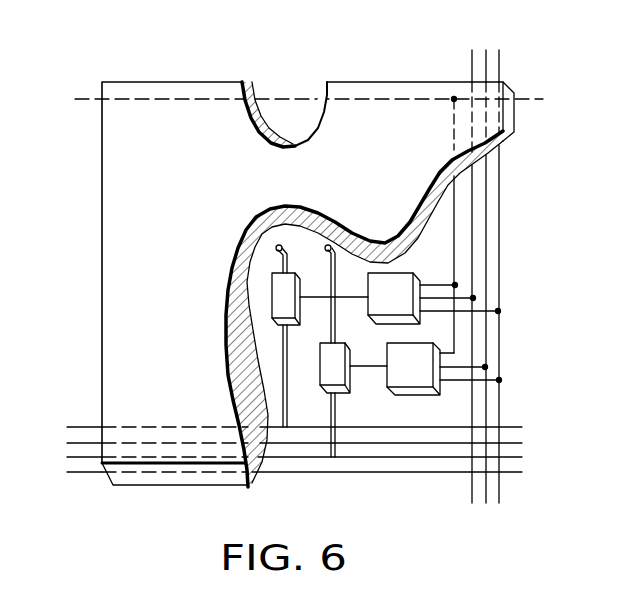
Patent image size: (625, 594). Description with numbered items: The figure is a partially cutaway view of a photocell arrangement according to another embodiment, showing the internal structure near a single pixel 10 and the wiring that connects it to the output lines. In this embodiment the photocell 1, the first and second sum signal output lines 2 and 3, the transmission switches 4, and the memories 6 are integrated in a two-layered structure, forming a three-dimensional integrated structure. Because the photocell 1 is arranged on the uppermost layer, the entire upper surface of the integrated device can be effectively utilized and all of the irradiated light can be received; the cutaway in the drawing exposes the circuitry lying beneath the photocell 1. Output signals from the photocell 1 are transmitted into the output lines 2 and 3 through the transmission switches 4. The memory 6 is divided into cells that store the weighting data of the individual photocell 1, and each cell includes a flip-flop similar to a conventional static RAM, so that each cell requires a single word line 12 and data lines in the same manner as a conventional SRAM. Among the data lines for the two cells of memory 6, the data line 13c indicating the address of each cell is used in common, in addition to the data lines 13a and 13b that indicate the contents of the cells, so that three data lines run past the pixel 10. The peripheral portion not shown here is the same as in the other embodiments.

The pixel 10 is at (96, 250).
The word line 12 is at (284, 98).
The photocell 1 is at (516, 126).
The data line 13a is at (476, 173).
The data line 13b is at (488, 197).
The data line 13c is at (500, 222).
The transmission switch 4 is at (296, 275).
The memory 6 is at (406, 272).
The first sum signal output line 2 is at (523, 432).
The second sum signal output line 3 is at (523, 462).